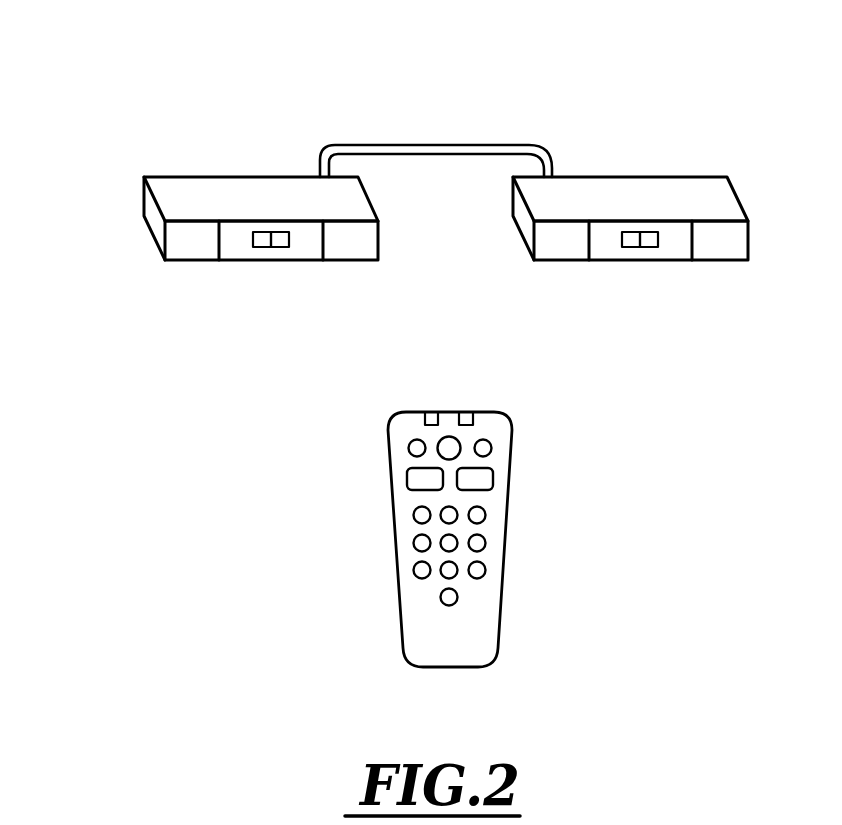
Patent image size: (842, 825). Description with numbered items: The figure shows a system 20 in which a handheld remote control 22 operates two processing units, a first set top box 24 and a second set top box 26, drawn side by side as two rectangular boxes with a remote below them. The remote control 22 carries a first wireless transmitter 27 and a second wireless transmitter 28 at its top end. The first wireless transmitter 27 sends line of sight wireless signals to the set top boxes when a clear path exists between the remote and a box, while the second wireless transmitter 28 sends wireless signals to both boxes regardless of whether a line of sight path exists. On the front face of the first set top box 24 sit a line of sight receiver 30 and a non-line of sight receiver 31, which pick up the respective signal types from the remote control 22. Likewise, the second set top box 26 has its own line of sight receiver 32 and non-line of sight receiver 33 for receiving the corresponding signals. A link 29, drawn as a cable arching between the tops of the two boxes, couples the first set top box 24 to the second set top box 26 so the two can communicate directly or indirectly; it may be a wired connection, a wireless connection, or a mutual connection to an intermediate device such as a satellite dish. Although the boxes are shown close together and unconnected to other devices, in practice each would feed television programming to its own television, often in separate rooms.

The system 20 is at (101, 71).
The remote control 22 is at (390, 460).
The first set top box 24 is at (185, 177).
The second set top box 26 is at (685, 177).
The first wireless transmitter 27 is at (430, 412).
The second wireless transmitter 28 is at (465, 412).
The link 29 is at (433, 150).
The line of sight receiver 30 is at (260, 247).
The non-line of sight receiver 31 is at (282, 247).
The line of sight receiver 32 is at (629, 247).
The non-line of sight receiver 33 is at (652, 247).